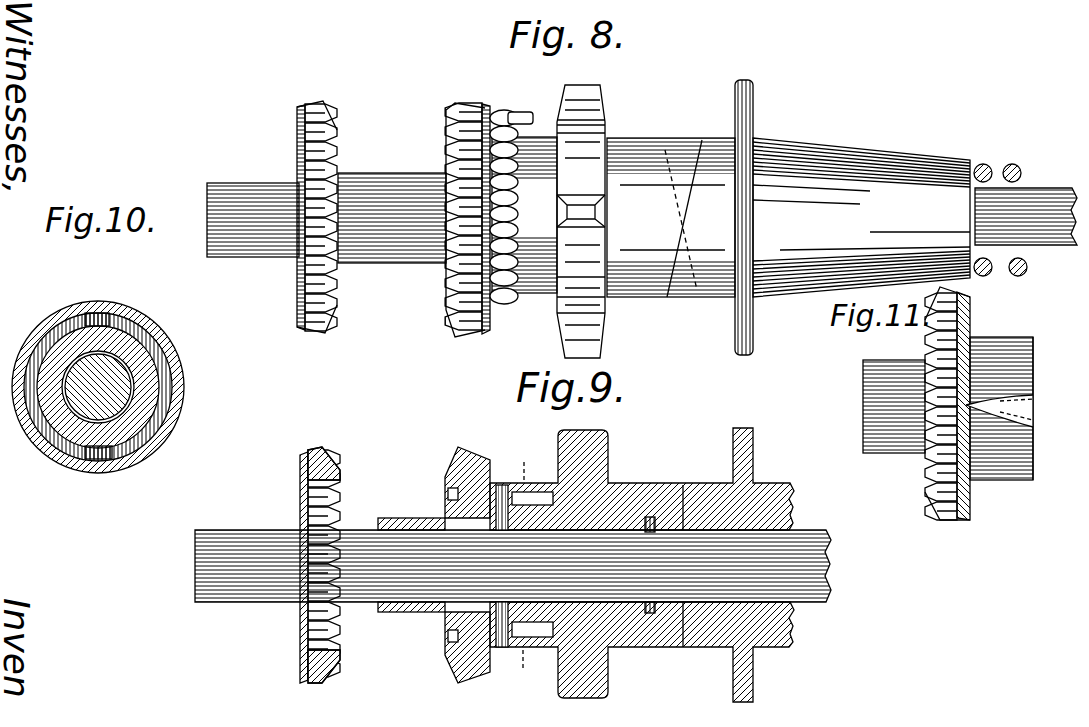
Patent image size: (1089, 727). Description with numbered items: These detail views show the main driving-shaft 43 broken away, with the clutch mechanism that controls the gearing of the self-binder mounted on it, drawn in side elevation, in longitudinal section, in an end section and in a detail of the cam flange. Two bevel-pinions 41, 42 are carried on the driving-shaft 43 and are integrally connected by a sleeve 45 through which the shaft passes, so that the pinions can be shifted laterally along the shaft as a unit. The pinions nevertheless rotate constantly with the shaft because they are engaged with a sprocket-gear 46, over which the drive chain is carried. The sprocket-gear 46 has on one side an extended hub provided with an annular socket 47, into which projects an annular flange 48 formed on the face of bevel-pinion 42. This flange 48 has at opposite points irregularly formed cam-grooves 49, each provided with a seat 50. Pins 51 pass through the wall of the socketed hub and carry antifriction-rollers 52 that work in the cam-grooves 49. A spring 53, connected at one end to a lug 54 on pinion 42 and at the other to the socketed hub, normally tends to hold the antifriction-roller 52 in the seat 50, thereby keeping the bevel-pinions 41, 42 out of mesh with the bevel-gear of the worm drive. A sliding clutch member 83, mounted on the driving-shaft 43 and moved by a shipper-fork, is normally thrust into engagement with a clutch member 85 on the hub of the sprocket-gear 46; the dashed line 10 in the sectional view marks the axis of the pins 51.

In FIG. 9, the axis line 10 is at (529, 565).
In FIG. 8, the bevel-pinion 41 is at (332, 318).
In FIG. 9, the bevel-pinion 41 is at (338, 648).
In FIG. 8, the bevel-pinion 42 is at (452, 316).
In FIG. 9, the bevel-pinion 42 is at (448, 655).
In FIG. 11, the bevel-pinion 42 is at (932, 468).
In FIG. 8, the driving-shaft 43 is at (236, 187).
In FIG. 10, the driving-shaft 43 is at (98, 387).
In FIG. 9, the driving-shaft 43 is at (250, 532).
In FIG. 8, the sleeve 45 is at (402, 260).
In FIG. 9, the sleeve 45 is at (390, 512).
In FIG. 11, the sleeve 45 is at (872, 454).
In FIG. 8, the sprocket-gear 46 is at (581, 221).
In FIG. 9, the sprocket-gear 46 is at (576, 695).
In FIG. 8, the annular socket 47 is at (524, 215).
In FIG. 10, the annular socket 47 is at (150, 347).
In FIG. 9, the annular socket 47 is at (530, 493).
In FIG. 11, the annular flange 48 is at (990, 340).
In FIG. 10, the cam-grooves 49 is at (78, 312).
In FIG. 11, the cam-grooves 49 is at (1036, 412).
In FIG. 11, the seat 50 is at (1008, 394).
In FIG. 9, the pins 51 is at (503, 488).
In FIG. 10, the antifriction-rollers 52 is at (103, 313).
In FIG. 9, the antifriction-rollers 52 is at (448, 492).
In FIG. 8, the spring 53 is at (520, 240).
In FIG. 8, the lug 54 is at (516, 113).
In FIG. 8, the sliding clutch member 83 is at (906, 217).
In FIG. 9, the sliding clutch member 83 is at (761, 565).
In FIG. 8, the clutch member 85 is at (671, 217).
In FIG. 9, the clutch member 85 is at (642, 565).